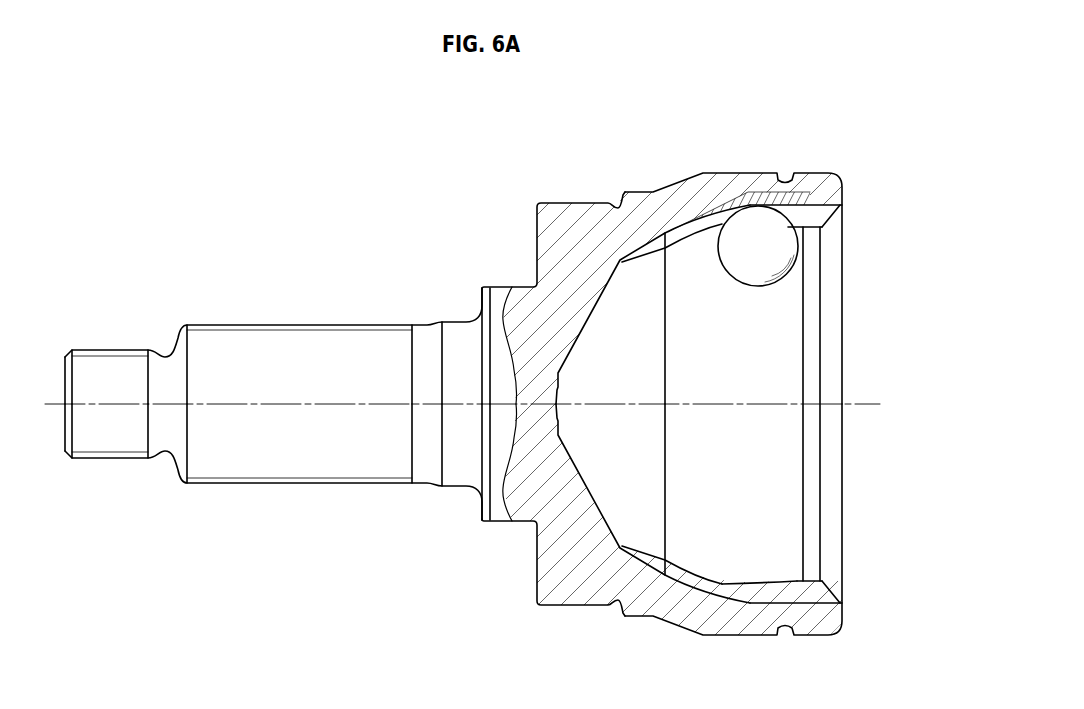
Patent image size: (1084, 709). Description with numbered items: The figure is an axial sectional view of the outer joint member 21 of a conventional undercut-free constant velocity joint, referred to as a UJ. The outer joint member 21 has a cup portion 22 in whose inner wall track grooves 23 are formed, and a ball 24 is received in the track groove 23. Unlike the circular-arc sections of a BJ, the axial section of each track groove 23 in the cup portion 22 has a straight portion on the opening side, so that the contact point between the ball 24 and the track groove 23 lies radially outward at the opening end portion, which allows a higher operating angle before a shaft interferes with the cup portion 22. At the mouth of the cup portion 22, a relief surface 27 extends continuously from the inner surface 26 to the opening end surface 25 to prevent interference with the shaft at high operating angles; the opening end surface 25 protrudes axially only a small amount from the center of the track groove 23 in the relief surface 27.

The outer joint member 21 is at (581, 173).
The cup portion 22 is at (723, 172).
The track groove 23 is at (828, 185).
The ball 24 is at (772, 222).
The opening end surface 25 is at (840, 200).
The inner surface 26 is at (813, 232).
The relief surface 27 is at (827, 228).